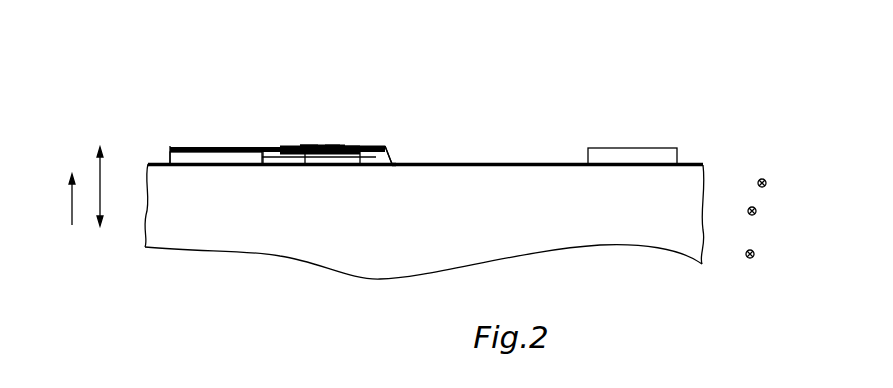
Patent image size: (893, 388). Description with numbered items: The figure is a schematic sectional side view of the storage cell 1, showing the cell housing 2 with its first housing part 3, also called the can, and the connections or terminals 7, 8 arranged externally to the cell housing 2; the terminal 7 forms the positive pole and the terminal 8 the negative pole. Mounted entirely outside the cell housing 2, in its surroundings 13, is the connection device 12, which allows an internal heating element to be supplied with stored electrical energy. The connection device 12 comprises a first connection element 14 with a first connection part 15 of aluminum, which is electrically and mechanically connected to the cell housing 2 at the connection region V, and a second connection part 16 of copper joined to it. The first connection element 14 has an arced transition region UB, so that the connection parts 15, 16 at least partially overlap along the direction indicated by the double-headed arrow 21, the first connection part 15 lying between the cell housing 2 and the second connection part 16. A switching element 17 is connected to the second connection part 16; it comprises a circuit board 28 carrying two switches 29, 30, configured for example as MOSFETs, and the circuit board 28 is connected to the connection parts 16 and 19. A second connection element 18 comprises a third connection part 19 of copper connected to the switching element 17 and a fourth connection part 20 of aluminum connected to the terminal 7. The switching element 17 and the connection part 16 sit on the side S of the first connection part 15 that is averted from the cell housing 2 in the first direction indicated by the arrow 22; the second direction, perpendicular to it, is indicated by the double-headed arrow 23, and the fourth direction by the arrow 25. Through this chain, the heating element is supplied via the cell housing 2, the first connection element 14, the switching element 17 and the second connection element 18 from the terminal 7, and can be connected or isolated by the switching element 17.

The storage cell 1 is at (689, 118).
The cell housing 2 is at (704, 190).
The first housing part 3 is at (700, 222).
The connection 7 is at (225, 146).
The connection 8 is at (611, 148).
The connection device 12 is at (365, 135).
The surroundings 13 is at (475, 121).
The first connection element 14 is at (389, 149).
The first connection part 15 is at (360, 166).
The second connection part 16 is at (376, 145).
The switching element 17 is at (322, 146).
The second connection element 18 is at (262, 146).
The third connection part 19 is at (263, 166).
The fourth connection part 20 is at (185, 146).
The double-headed arrow 21 is at (104, 185).
The arrow 22 is at (68, 195).
The double-headed arrow 23 is at (756, 215).
The arrow 25 is at (752, 259).
The circuit board 28 is at (305, 166).
The switch 29 is at (317, 145).
The switch 30 is at (334, 146).
The side S is at (326, 146).
The connection region V is at (331, 167).
The transition region UB is at (392, 164).